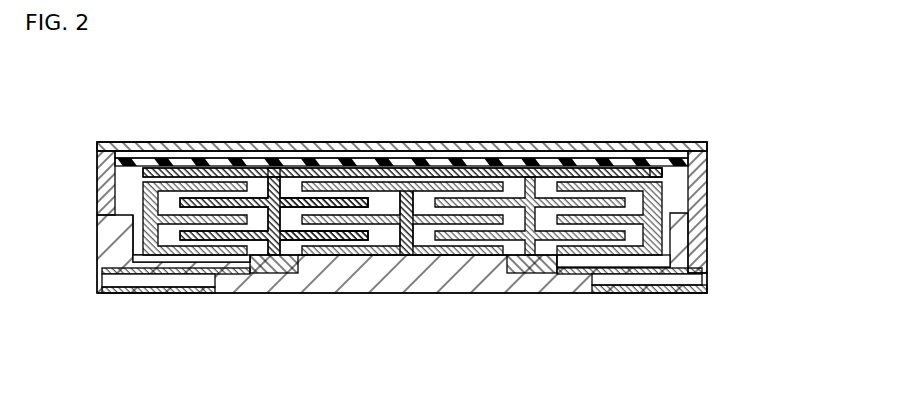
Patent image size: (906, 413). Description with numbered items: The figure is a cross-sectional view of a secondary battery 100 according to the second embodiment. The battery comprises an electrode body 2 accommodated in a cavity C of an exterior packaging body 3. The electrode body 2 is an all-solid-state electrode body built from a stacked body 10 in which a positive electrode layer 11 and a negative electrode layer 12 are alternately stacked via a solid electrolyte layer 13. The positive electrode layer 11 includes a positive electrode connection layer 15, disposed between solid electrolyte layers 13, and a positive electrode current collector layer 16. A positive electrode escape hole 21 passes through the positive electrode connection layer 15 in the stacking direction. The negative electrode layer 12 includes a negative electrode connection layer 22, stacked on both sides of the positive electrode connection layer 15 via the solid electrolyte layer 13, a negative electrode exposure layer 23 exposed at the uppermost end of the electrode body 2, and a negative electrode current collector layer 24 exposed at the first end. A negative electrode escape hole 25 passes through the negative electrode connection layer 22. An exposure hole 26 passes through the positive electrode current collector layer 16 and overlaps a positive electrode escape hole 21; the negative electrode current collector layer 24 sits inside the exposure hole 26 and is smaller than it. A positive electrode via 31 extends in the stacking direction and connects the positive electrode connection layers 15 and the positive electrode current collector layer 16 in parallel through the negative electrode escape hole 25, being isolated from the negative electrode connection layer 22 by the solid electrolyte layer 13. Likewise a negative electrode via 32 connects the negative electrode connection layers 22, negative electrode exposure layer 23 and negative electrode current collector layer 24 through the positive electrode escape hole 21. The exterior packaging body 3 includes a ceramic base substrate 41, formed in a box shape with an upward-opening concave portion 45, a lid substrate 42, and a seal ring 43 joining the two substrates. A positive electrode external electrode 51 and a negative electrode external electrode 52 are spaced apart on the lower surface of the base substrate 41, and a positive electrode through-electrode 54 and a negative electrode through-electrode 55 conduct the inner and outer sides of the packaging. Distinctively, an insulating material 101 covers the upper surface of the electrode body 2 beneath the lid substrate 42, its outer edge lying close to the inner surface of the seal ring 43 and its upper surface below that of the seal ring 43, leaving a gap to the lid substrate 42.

The secondary battery 100 is at (735, 106).
The electrode body 2 is at (668, 186).
The exterior packaging body 3 is at (716, 137).
The stacked body 10 is at (401, 150).
The positive electrode layer 11 is at (510, 167).
The negative electrode layer 12 is at (497, 158).
The solid electrolyte layer 13 is at (593, 176).
The positive electrode connection layer 15 is at (468, 217).
The positive electrode current collector layer 16 is at (479, 262).
The positive electrode escape hole 21 is at (291, 208).
The negative electrode connection layer 22 is at (346, 204).
The negative electrode exposure layer 23 is at (318, 168).
The negative electrode current collector layer 24 is at (275, 274).
The negative electrode escape hole 25 is at (386, 210).
The exposure hole 26 is at (262, 275).
The positive electrode via 31 is at (408, 253).
The negative electrode via 32 is at (275, 178).
The base substrate 41 is at (103, 253).
The lid substrate 42 is at (145, 145).
The seal ring 43 is at (102, 192).
The concave portion 45 is at (142, 242).
The positive electrode external electrode 51 is at (636, 292).
The negative electrode external electrode 52 is at (153, 293).
The positive electrode through-electrode 54 is at (563, 272).
The negative electrode through-electrode 55 is at (220, 275).
The insulating material 101 is at (643, 157).
The cavity C is at (673, 170).